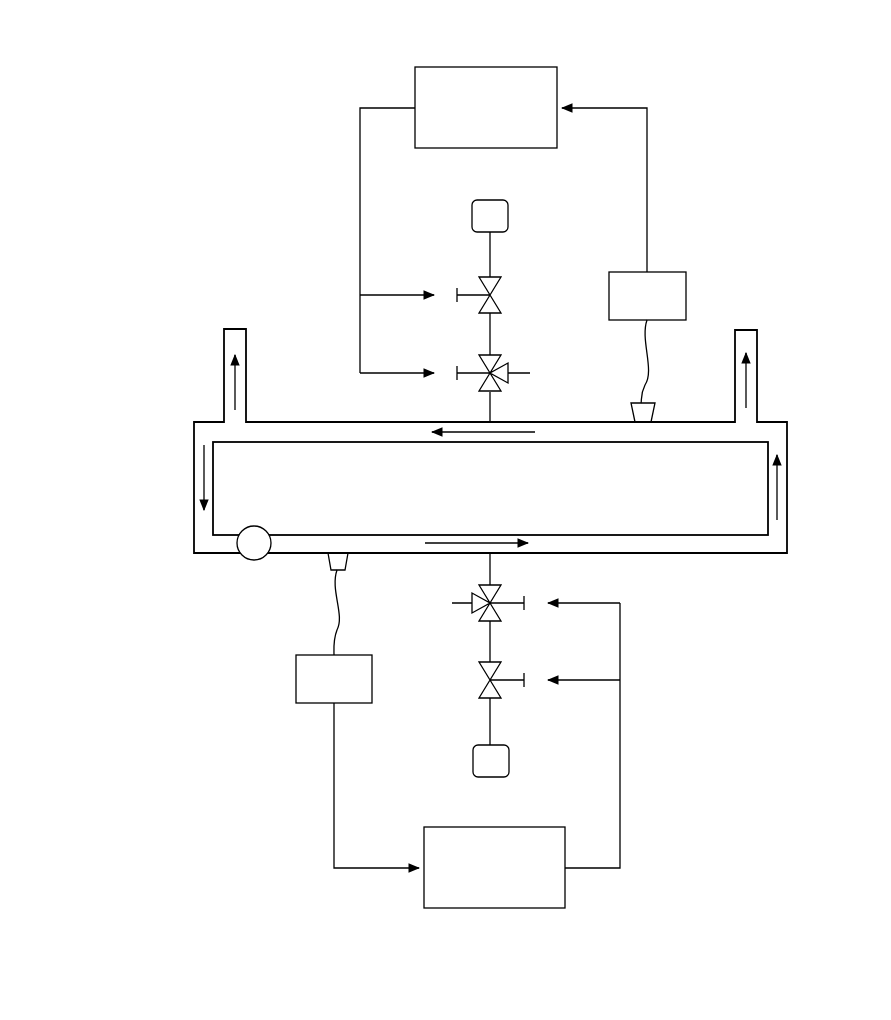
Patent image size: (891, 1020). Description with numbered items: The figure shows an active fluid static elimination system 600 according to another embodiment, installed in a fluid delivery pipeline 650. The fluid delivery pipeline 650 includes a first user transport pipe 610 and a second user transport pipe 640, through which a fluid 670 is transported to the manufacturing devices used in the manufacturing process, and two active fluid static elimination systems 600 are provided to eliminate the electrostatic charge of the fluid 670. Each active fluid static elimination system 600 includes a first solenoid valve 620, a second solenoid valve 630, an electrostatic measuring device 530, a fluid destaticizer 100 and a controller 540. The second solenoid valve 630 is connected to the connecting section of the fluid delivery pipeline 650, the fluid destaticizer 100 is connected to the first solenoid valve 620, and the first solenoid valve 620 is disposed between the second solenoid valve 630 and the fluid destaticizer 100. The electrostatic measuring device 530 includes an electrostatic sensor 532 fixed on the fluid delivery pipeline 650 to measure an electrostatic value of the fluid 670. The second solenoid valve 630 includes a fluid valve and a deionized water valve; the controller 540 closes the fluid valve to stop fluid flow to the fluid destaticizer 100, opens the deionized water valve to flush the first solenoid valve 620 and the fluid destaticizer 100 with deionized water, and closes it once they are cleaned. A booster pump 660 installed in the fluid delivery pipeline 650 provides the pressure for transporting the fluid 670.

The fluid destaticizer 100 is at (473, 222).
The electrostatic measuring device 530 is at (680, 275).
The electrostatic sensor 532 is at (657, 408).
The controller 540 is at (550, 76).
The active fluid static elimination system 600 is at (262, 222).
The first user transport pipe 610 is at (752, 338).
The first solenoid valve 620 is at (480, 305).
The second solenoid valve 630 is at (480, 385).
The second user transport pipe 640 is at (225, 368).
The fluid delivery pipeline 650 is at (195, 466).
The booster pump 660 is at (240, 558).
The fluid 670 is at (778, 485).